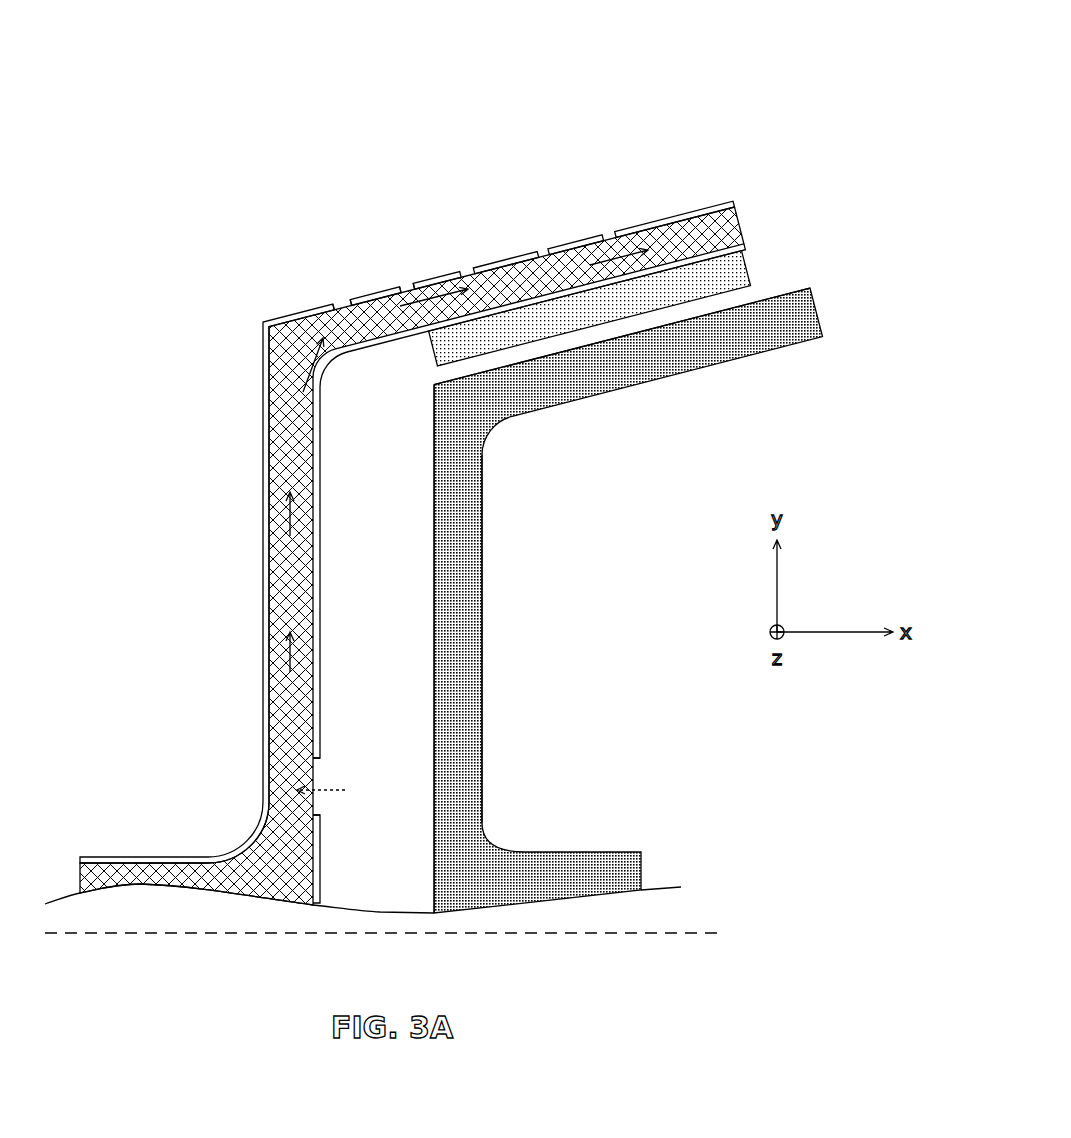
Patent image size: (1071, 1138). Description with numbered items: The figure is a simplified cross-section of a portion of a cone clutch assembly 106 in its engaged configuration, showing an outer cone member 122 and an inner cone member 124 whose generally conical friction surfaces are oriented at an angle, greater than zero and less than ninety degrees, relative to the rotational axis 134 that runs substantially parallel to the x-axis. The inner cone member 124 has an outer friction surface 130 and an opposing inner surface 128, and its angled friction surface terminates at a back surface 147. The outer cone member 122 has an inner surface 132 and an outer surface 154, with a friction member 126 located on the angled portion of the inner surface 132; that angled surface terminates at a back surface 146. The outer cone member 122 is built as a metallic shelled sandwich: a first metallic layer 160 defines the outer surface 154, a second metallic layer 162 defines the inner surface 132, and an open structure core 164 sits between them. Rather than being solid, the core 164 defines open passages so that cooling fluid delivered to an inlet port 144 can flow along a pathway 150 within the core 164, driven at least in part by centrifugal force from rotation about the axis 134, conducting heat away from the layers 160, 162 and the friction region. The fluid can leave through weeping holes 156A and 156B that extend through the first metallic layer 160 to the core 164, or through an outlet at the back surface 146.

The cone clutch assembly 106 is at (815, 82).
The outer cone member 122 is at (237, 500).
The inner cone member 124 is at (520, 572).
The friction member 126 is at (747, 262).
The inner surface 128 is at (483, 492).
The outer surface 130 is at (683, 320).
The inner surface 132 is at (326, 455).
The rotational axis 134 is at (408, 938).
The inlet port 144 is at (322, 773).
The back surface 146 is at (738, 221).
The back surface 147 is at (815, 313).
The pathway 150 is at (342, 794).
The outer surface 154 is at (262, 373).
The weeping hole 156A is at (343, 307).
The weeping hole 156B is at (403, 290).
The first metallic layer 160 is at (262, 640).
The second metallic layer 162 is at (323, 560).
The open structure core 164 is at (520, 281).